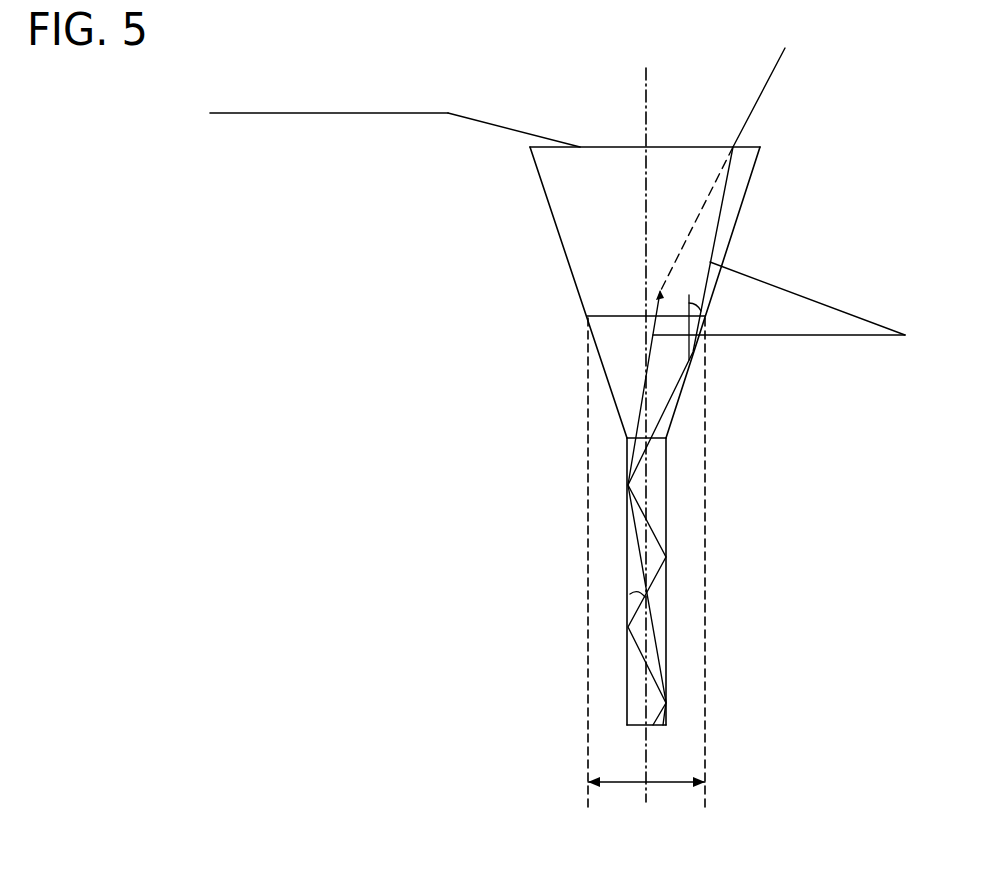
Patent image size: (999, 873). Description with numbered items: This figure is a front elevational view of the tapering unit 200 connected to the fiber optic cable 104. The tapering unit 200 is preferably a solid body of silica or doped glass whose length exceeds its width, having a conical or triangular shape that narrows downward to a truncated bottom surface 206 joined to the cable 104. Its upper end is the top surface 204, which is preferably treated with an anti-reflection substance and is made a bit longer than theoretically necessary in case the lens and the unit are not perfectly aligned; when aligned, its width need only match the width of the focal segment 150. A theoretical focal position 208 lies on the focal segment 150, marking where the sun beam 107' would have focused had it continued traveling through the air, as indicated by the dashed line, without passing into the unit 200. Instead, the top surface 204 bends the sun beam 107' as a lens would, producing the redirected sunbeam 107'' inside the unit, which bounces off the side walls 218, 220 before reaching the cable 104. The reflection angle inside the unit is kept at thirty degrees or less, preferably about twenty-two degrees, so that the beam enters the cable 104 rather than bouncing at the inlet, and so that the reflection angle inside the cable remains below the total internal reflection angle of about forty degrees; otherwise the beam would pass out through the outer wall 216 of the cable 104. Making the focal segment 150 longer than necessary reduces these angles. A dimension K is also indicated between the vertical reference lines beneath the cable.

The tapering unit 200 is at (468, 50).
The top surface 204 is at (613, 147).
The side wall 218 is at (555, 227).
The side wall 220 is at (742, 208).
The theoretical focal position 208 is at (647, 313).
The focal segment 150 is at (602, 318).
The bottom surface 206 is at (626, 441).
The outer wall 216 is at (627, 550).
The cable 104 is at (667, 527).
The sun beam 107' is at (763, 386).
The sunbeam 107'' is at (805, 304).
The width dimension K is at (670, 782).